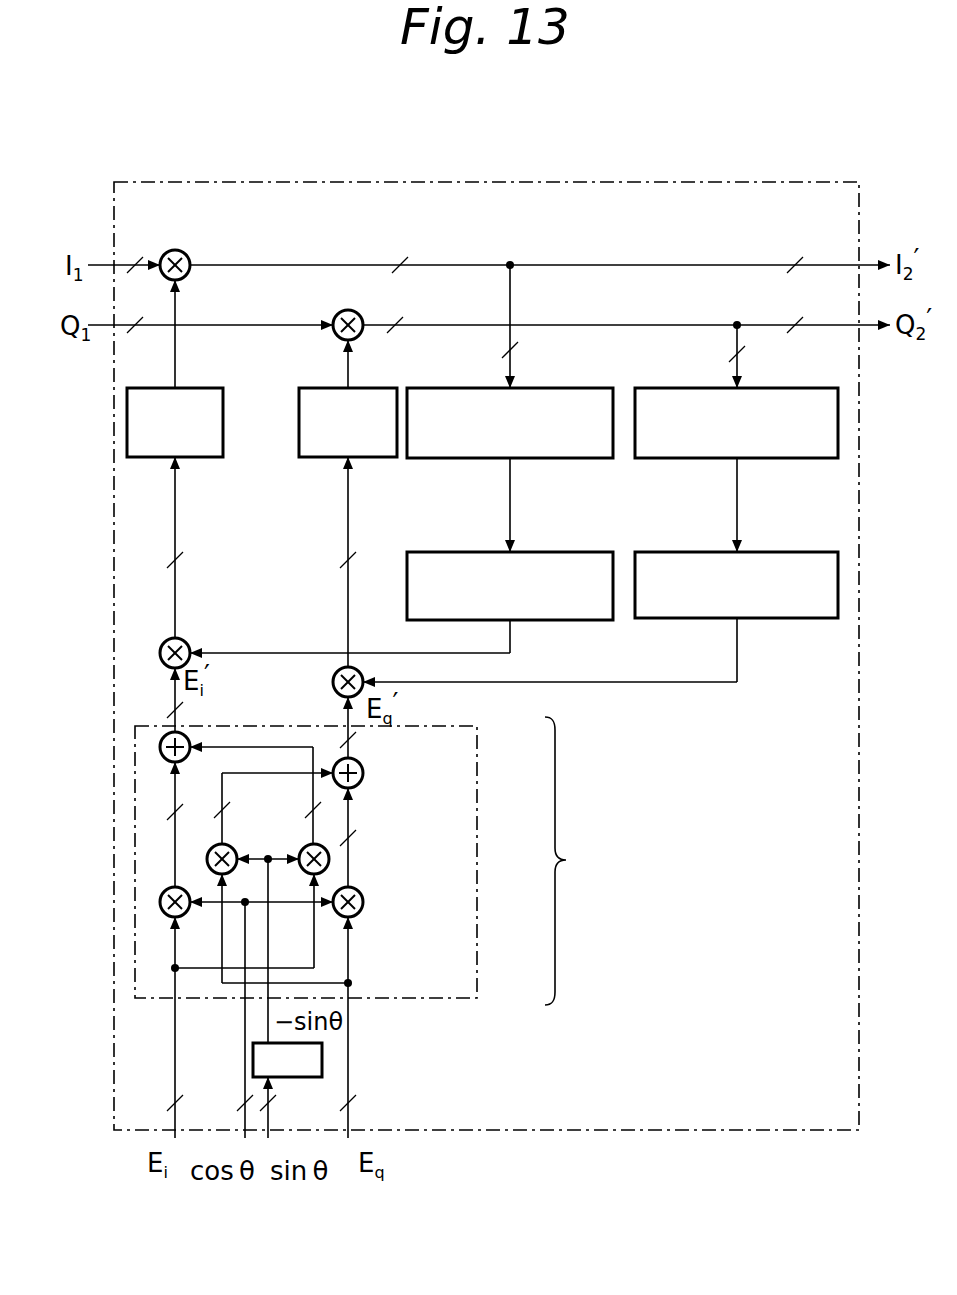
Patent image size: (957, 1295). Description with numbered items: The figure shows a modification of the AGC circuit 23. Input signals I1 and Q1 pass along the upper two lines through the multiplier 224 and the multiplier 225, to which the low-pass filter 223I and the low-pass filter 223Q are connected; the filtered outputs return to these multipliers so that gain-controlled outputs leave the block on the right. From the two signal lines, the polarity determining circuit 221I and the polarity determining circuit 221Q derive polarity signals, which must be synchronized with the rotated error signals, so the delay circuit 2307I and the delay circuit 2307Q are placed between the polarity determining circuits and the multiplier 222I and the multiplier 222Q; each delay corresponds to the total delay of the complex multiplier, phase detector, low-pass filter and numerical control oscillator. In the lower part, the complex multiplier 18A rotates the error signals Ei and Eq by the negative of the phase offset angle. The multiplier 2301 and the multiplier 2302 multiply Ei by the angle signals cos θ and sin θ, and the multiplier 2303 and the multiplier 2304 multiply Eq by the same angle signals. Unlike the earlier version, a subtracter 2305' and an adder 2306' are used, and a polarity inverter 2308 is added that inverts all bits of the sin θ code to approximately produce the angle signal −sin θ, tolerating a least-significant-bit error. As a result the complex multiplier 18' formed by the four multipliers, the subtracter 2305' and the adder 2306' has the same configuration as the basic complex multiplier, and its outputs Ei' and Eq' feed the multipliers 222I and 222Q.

The AGC circuit 23 is at (470, 182).
The multiplier 224 is at (218, 226).
The multiplier 225 is at (338, 314).
The low-pass filter 223I is at (200, 388).
The low-pass filter 223Q is at (375, 388).
The polarity determining circuit 221I is at (530, 388).
The polarity determining circuit 221Q is at (758, 458).
The delay circuit 2307I is at (530, 620).
The delay circuit 2307Q is at (780, 618).
The multiplier 222I is at (216, 616).
The multiplier 222Q is at (340, 682).
The subtracter 2305' is at (134, 763).
The adder 2306' is at (384, 769).
The multiplier 2302 is at (268, 824).
The multiplier 2304 is at (325, 850).
The multiplier 2301 is at (168, 912).
The multiplier 2303 is at (360, 912).
The polarity inverter 2308 is at (322, 1056).
The complex multiplier 18' is at (333, 862).
The complex multiplier 18A is at (588, 861).